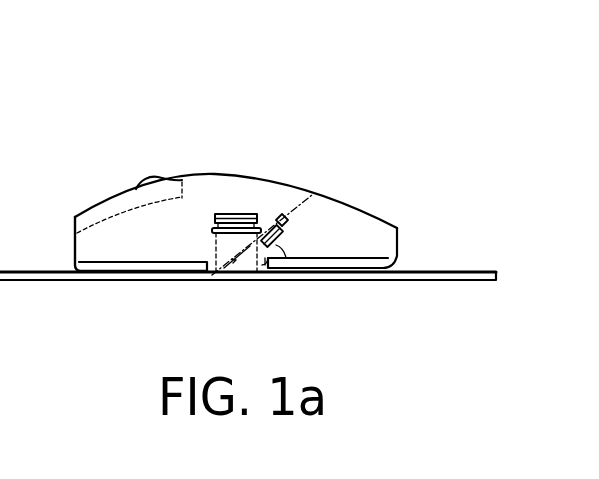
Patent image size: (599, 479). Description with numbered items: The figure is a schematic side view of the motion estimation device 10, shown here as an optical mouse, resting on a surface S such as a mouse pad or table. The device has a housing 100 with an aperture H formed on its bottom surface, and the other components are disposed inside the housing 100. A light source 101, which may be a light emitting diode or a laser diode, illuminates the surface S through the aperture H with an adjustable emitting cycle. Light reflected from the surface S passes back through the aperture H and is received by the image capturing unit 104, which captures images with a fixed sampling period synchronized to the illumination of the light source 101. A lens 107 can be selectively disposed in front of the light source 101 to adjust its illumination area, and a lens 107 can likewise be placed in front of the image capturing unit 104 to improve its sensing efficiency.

The motion estimation device 10 is at (113, 157).
The housing 100 is at (373, 212).
The light source 101 is at (280, 216).
The image capturing unit 104 is at (243, 213).
The lens 107 is at (258, 213).
The surface S is at (448, 271).
The aperture H is at (217, 273).